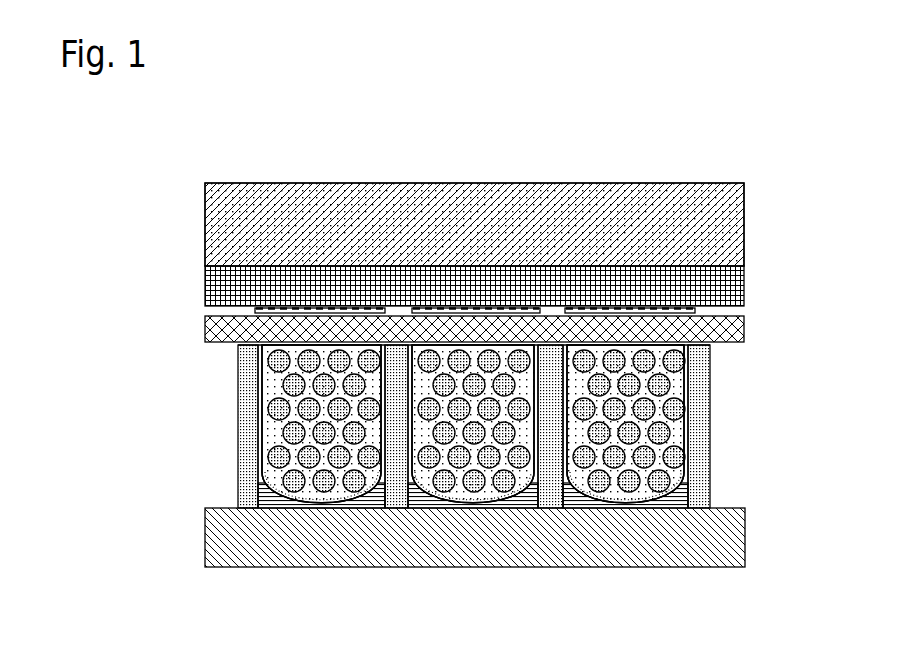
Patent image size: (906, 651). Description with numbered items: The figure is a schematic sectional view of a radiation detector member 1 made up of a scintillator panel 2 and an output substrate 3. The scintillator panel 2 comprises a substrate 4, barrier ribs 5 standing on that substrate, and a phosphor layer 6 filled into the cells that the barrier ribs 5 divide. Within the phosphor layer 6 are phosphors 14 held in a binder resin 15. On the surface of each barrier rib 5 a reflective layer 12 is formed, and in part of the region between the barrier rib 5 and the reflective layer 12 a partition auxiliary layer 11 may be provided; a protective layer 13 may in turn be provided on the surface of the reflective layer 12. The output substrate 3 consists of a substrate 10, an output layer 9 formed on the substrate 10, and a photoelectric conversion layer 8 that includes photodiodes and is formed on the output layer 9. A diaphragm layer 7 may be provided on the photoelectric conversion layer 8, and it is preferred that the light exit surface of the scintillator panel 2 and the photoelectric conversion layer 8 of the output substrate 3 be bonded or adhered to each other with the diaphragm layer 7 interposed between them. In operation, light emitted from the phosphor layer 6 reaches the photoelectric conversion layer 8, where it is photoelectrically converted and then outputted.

The radiation detector member 1 is at (64, 183).
The scintillator panel 2 is at (163, 347).
The output substrate 3 is at (163, 188).
The substrate 4 is at (720, 553).
The barrier ribs 5 is at (708, 352).
The phosphor layer 6 is at (494, 423).
The diaphragm layer 7 is at (712, 333).
The photoelectric conversion layer 8 is at (750, 307).
The output layer 9 is at (720, 291).
The substrate 10 is at (723, 225).
The partition auxiliary layer 11 is at (688, 503).
The reflective layer 12 is at (690, 478).
The protective layer 13 is at (688, 452).
The phosphors 14 is at (293, 433).
The binder resin 15 is at (675, 430).